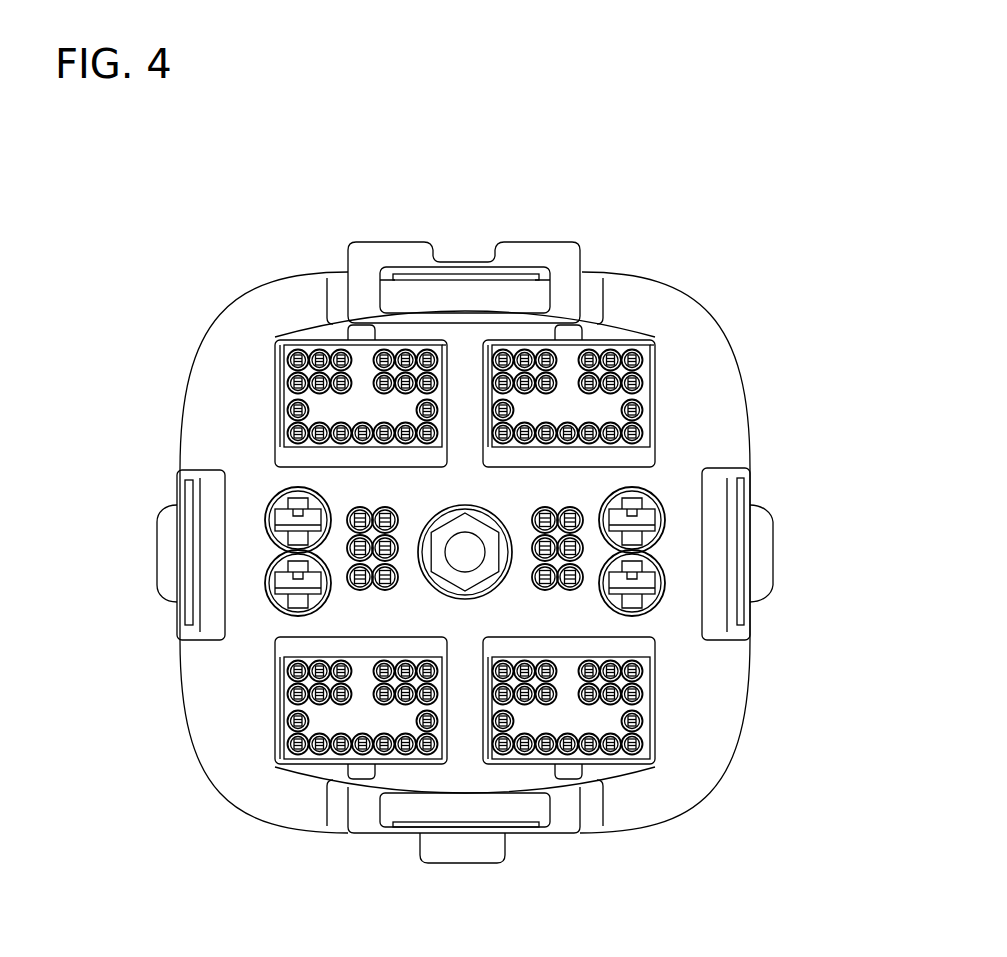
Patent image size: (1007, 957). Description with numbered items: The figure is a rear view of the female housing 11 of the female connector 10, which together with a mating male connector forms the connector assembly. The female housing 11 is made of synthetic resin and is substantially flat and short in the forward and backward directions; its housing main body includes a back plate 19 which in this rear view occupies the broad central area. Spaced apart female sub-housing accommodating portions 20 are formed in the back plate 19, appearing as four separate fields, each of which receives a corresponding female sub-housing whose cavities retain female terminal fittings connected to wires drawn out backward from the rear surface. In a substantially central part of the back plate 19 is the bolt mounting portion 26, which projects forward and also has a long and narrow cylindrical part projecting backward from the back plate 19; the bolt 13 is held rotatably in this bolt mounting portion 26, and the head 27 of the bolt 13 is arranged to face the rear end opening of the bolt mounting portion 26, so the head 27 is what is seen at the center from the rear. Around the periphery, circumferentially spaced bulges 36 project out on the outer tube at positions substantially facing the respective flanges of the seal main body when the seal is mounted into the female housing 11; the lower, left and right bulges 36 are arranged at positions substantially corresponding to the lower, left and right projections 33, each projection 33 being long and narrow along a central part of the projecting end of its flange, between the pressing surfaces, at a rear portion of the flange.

The female connector 10 is at (496, 206).
The female housing 11 is at (630, 286).
The bolt 13 is at (457, 597).
The back plate 19 is at (680, 420).
The female sub-housing accommodating portions 20 is at (290, 368).
The bolt mounting portion 26 is at (450, 520).
The head 27 is at (450, 575).
The projection 33 is at (456, 272).
The bulges 36 is at (392, 250).